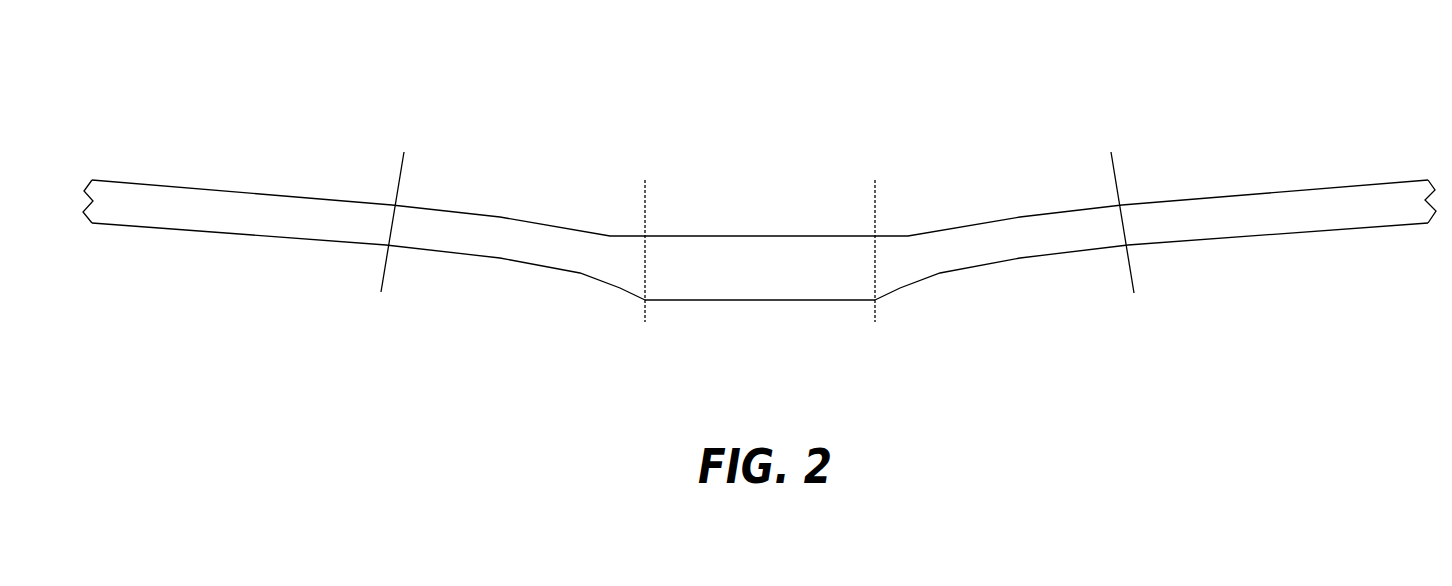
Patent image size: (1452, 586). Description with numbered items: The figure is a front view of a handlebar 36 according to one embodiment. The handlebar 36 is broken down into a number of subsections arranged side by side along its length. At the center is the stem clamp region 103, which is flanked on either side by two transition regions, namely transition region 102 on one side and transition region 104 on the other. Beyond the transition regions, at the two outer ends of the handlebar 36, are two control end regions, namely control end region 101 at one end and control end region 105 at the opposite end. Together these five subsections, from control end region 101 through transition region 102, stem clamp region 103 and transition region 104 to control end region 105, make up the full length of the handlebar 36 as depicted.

The handlebar 36 is at (357, 87).
The control end region 101 is at (85, 345).
The transition region 102 is at (380, 345).
The stem clamp region 103 is at (652, 345).
The transition region 104 is at (887, 345).
The control end region 105 is at (1167, 345).